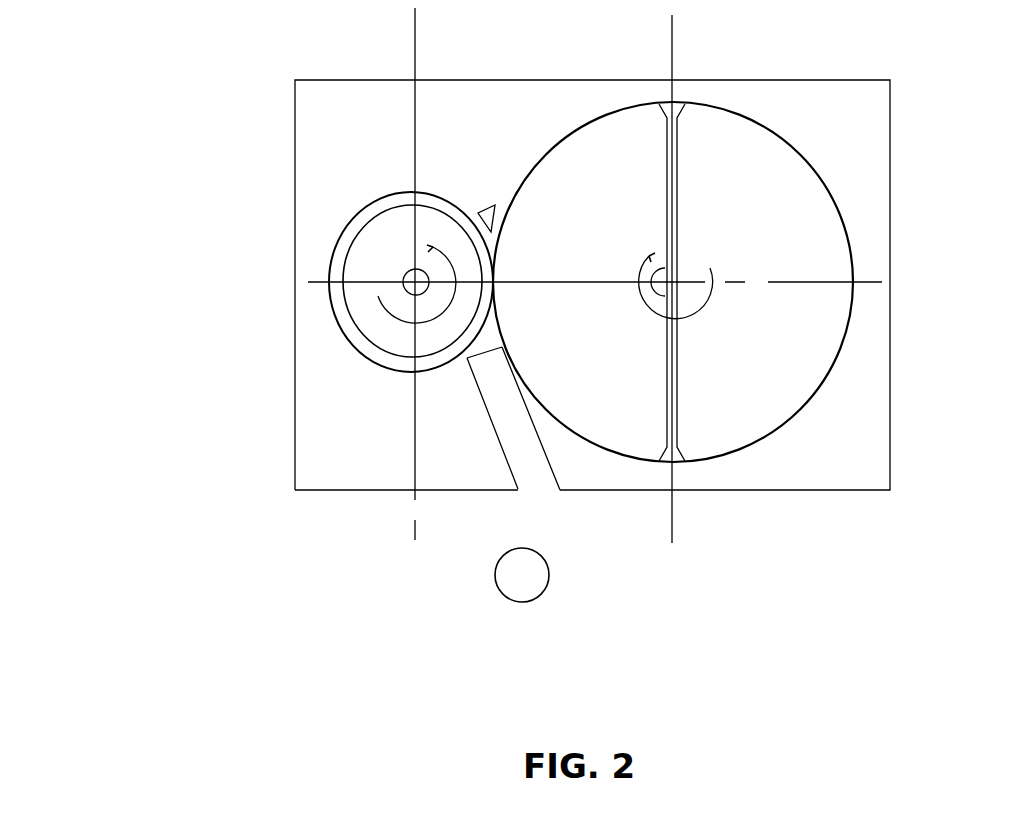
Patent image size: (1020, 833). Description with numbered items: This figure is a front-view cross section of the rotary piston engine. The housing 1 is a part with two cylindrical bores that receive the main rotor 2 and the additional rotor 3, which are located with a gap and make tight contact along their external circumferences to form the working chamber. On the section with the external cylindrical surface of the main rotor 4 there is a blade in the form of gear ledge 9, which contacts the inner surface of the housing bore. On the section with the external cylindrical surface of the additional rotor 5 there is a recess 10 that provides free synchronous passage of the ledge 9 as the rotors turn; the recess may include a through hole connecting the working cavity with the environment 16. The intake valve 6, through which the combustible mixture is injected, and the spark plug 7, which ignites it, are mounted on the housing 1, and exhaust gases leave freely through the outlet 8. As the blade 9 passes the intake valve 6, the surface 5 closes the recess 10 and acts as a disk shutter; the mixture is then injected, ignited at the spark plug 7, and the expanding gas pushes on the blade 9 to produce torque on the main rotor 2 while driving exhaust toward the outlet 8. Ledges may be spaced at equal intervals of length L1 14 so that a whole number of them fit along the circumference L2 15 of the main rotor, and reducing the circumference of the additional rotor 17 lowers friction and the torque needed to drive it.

The housing 1 is at (319, 97).
The main rotor 2 is at (416, 282).
The additional rotor 3 is at (675, 282).
The section with the external cylindrical surface of the main rotor 4 is at (388, 245).
The section with the external cylindrical surface of the additional rotor 5 is at (750, 143).
The intake valve 6 is at (495, 205).
The spark plug 7 is at (466, 197).
The outlet 8 is at (532, 472).
The blade in the form of gear ledge 9 is at (335, 282).
The recess 10 is at (677, 107).
The length L1 14 is at (352, 338).
The circumference L2 15 is at (382, 350).
The environment 16 is at (500, 592).
The circumference of the additional rotor 17 is at (467, 358).